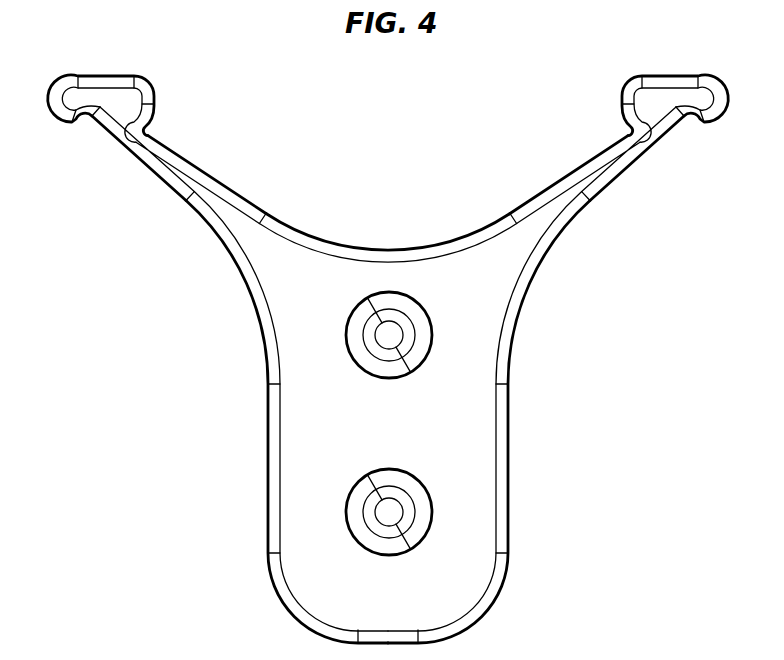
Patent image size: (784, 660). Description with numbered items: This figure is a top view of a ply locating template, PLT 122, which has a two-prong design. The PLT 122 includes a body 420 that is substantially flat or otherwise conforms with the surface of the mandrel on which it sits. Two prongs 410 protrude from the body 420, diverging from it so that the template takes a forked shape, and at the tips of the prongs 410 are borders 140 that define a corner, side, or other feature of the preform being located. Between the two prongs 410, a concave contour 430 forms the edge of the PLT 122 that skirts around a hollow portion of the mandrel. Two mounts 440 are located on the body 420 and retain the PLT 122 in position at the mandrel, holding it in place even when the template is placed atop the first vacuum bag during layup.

The PLT 122 is at (688, 276).
The border 140 is at (109, 64).
The prong 410 is at (193, 153).
The body 420 is at (470, 447).
The contour 430 is at (335, 236).
The mount 440 is at (353, 331).